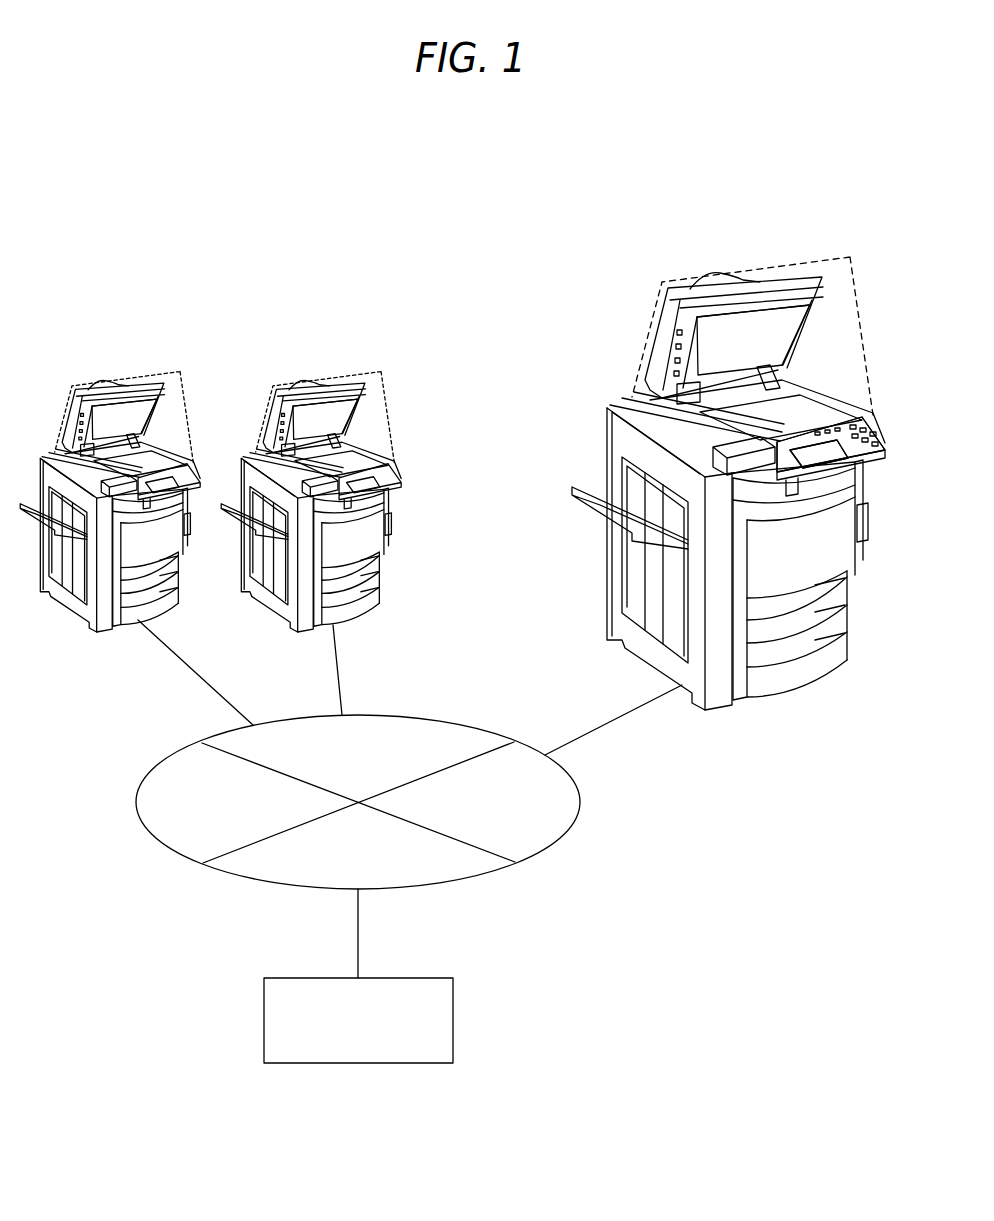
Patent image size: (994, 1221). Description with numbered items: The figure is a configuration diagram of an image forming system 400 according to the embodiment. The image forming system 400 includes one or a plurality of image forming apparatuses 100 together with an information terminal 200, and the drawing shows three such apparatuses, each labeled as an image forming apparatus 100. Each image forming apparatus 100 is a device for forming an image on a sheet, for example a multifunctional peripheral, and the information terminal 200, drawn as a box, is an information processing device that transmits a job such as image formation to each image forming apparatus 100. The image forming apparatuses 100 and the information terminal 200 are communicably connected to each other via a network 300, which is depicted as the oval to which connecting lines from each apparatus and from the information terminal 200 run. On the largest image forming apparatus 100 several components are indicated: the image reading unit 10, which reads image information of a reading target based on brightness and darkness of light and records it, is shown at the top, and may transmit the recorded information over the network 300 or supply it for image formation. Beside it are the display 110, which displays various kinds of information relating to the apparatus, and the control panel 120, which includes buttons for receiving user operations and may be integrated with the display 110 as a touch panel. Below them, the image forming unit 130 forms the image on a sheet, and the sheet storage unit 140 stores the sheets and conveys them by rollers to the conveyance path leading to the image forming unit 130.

The image forming system 400 is at (226, 190).
The image forming apparatus 100 is at (475, 439).
The image reading unit 10 is at (817, 257).
The display 110 is at (840, 447).
The control panel 120 is at (905, 427).
The image forming unit 130 is at (838, 550).
The sheet storage unit 140 is at (857, 575).
The network 300 is at (582, 802).
The information terminal 200 is at (455, 1018).